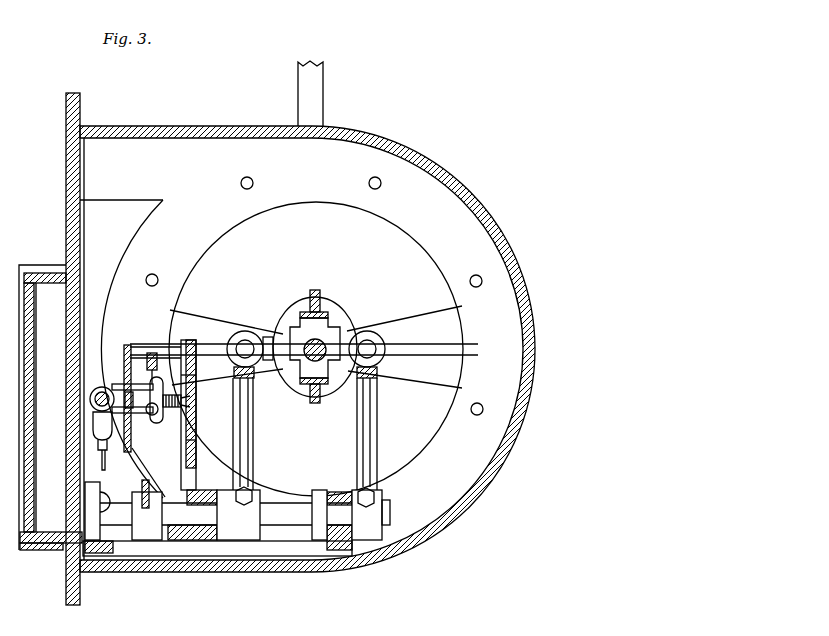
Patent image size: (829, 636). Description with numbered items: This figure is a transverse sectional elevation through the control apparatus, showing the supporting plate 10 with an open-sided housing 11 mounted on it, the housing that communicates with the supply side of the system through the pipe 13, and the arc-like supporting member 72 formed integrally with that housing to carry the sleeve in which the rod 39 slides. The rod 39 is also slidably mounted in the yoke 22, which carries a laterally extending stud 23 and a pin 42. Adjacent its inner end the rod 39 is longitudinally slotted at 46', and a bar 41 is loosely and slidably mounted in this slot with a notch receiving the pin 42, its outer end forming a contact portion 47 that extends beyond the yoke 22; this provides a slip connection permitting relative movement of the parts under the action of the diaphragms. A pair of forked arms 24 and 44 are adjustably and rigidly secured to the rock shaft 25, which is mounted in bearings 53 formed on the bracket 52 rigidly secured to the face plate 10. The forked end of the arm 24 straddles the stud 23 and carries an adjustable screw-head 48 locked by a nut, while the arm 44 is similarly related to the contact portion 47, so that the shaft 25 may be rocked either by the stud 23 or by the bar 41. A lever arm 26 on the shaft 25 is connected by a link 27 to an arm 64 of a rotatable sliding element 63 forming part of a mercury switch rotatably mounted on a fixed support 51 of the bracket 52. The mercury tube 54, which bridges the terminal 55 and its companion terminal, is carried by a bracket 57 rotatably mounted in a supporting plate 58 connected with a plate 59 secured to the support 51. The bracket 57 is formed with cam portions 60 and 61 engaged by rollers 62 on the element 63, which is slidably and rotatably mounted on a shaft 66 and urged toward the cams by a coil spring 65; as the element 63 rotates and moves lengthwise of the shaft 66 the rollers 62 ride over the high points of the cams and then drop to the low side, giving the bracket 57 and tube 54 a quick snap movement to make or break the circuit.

The supporting plate 10 is at (66, 122).
The housing 11 is at (293, 297).
The pipe 13 is at (316, 92).
The yoke 22 is at (313, 292).
The stud 23 is at (247, 348).
The forked arm 24 is at (258, 433).
The rock shaft 25 is at (276, 504).
The lever arm 26 is at (142, 482).
The link 27 is at (141, 347).
The rod 39 is at (318, 339).
The bar 41 is at (334, 347).
The pin 42 is at (270, 335).
The forked arm 44 is at (376, 447).
The slot 46' is at (237, 334).
The contact portion 47 is at (367, 346).
The adjustable screw-head 48 is at (236, 345).
The fixed support 51 is at (197, 431).
The bracket 52 is at (243, 551).
The bearing 53 is at (209, 491).
The mercury tube 54 is at (90, 398).
The terminal 55 is at (103, 462).
The bracket 57 is at (104, 382).
The supporting plate 58 is at (123, 367).
The plate 59 is at (192, 340).
The cam portion 60 is at (148, 470).
The cam portion 61 is at (127, 345).
The roller 62 is at (153, 420).
The rotatable sliding element 63 is at (196, 380).
The arm 64 is at (153, 352).
The coil spring 65 is at (183, 401).
The shaft 66 is at (186, 409).
The arc-like supporting member 72 is at (433, 372).